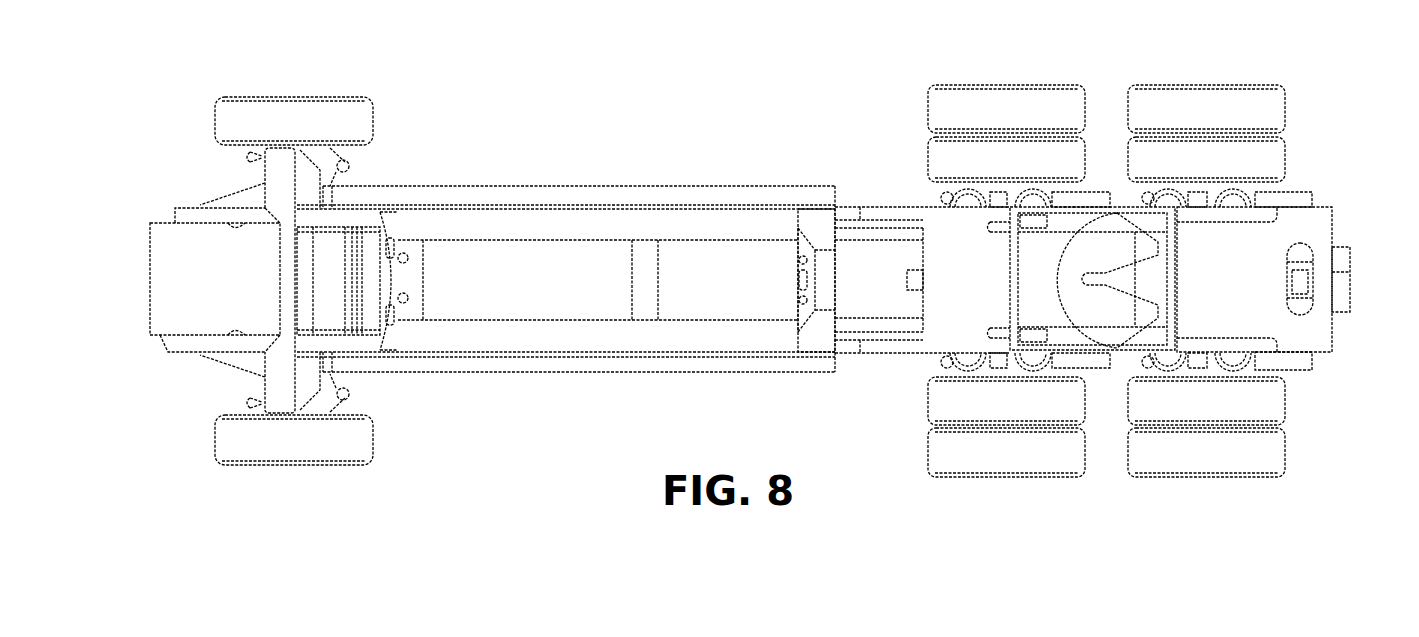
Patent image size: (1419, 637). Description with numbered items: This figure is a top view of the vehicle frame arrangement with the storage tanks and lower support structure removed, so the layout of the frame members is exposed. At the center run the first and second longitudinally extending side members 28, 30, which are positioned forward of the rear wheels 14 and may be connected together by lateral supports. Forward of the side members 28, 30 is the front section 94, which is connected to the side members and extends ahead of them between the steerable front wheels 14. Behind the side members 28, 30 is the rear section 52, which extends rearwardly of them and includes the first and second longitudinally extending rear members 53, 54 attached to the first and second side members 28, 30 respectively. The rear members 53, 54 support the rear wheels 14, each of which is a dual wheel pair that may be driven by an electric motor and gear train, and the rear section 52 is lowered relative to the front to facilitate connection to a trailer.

The wheels 14 is at (290, 95).
The front section 94 is at (148, 197).
The second side member 30 is at (592, 186).
The first side member 28 is at (563, 375).
The rear section 52 is at (1347, 190).
The second rear member 54 is at (1270, 207).
The first rear member 53 is at (1290, 368).